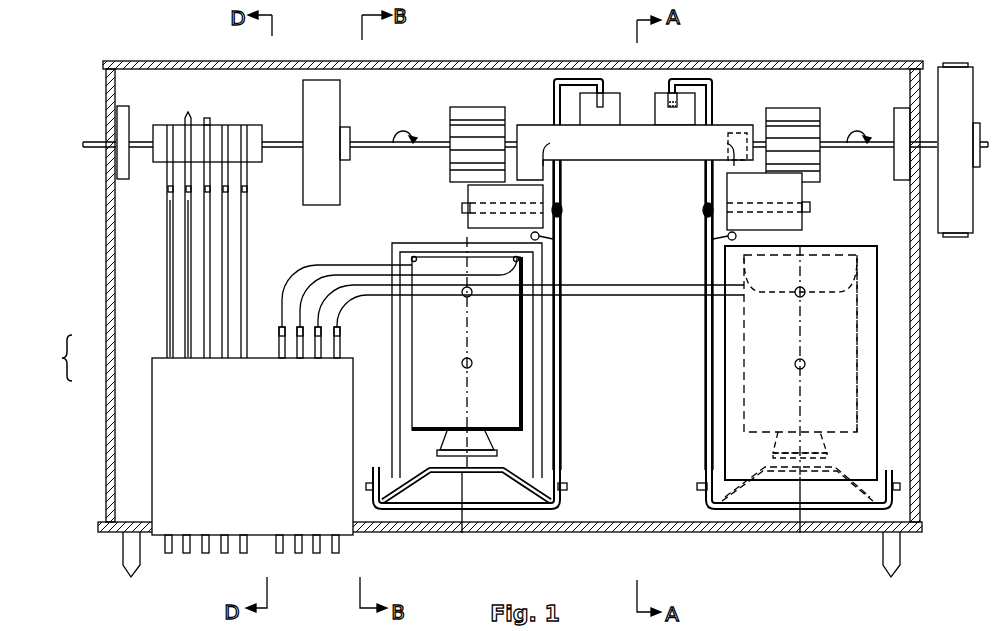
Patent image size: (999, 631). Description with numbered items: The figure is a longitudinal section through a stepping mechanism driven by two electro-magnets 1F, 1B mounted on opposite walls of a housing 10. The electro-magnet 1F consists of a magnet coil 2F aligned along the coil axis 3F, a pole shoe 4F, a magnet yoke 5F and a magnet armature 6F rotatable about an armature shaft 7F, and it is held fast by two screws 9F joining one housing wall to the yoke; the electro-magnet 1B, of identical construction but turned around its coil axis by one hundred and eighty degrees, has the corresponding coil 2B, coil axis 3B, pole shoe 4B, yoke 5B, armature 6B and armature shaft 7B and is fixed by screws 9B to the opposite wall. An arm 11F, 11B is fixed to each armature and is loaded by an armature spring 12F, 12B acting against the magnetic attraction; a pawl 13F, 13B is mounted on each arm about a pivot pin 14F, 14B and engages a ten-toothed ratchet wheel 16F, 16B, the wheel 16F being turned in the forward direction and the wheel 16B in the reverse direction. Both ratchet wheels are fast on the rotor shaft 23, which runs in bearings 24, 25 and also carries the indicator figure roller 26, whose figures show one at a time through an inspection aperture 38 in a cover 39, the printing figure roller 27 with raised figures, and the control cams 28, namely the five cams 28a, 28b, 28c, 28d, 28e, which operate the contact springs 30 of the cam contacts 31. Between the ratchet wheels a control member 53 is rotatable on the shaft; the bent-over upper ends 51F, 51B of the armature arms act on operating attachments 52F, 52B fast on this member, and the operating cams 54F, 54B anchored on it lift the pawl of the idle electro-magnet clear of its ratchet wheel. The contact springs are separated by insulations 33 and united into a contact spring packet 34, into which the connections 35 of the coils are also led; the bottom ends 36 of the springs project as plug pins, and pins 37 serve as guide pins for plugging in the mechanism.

The electro-magnet 1B is at (498, 371).
The electro-magnet 1F is at (843, 372).
The magnet coil 2B is at (523, 336).
The magnet coil 2F is at (858, 337).
The coil axis 3B is at (468, 405).
The coil axis 3F is at (800, 408).
The pole shoe 4B is at (493, 450).
The pole shoe 4F is at (827, 452).
The magnet yoke 5B is at (542, 307).
The magnet yoke 5F is at (877, 308).
The magnet armature 6B is at (462, 533).
The magnet armature 6F is at (800, 533).
The armature shaft 7B is at (567, 485).
The armature shaft 7F is at (900, 486).
The screws 9B is at (469, 297).
The screws 9F is at (802, 297).
The housing 10 is at (562, 533).
The arm of the armature 11B is at (562, 270).
The arm of the armature 11F is at (704, 270).
The armature spring 12B is at (541, 235).
The armature spring 12F is at (728, 236).
The pawl 13B is at (488, 219).
The pawl 13F is at (780, 222).
The pivot pin 14B is at (462, 206).
The pivot pin 14F is at (810, 207).
The ten-toothed ratchet wheel 16B is at (480, 107).
The ten-toothed ratchet wheel 16F is at (795, 108).
The rotor shaft 23 is at (427, 138).
The bearing 24 is at (903, 182).
The bearing 25 is at (117, 178).
The indicator figure roller 26 is at (302, 87).
The printing figure roller 27 is at (973, 87).
The control cams 28 is at (155, 124).
The control cam 28a is at (169, 125).
The control cam 28b is at (188, 125).
The control cam 28c is at (207, 118).
The control cam 28d is at (226, 125).
The control cam 28e is at (245, 125).
The contact springs 30 is at (190, 322).
The cam contacts 31 is at (186, 192).
The insulations 33 is at (163, 383).
The contact spring packet 34 is at (54, 358).
The connections 35 is at (343, 289).
The bottom ends of the contact springs 36 is at (278, 553).
The pins 37 is at (128, 558).
The inspection aperture 38 is at (327, 60).
The cover 39 is at (160, 60).
The upper end of the armature arm 51B is at (590, 75).
The upper end of the armature arm 51F is at (712, 78).
The operating attachment 52B is at (608, 92).
The operating attachment 52F is at (662, 92).
The control member 53 is at (638, 153).
The operating cam 54B is at (530, 168).
The operating cam 54F is at (733, 155).